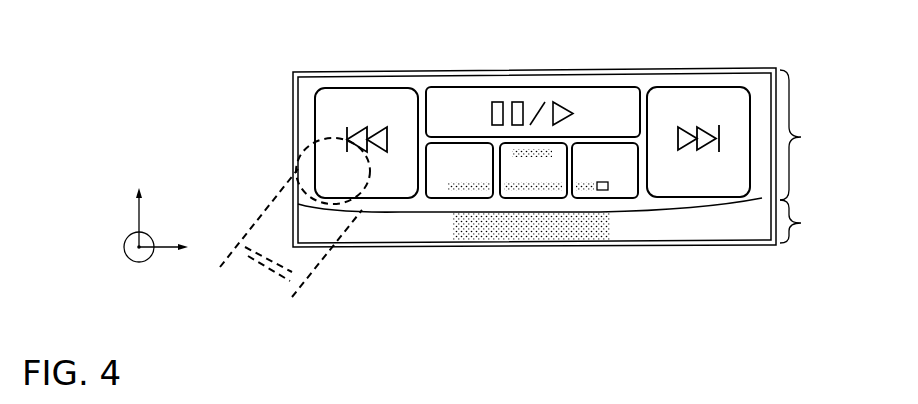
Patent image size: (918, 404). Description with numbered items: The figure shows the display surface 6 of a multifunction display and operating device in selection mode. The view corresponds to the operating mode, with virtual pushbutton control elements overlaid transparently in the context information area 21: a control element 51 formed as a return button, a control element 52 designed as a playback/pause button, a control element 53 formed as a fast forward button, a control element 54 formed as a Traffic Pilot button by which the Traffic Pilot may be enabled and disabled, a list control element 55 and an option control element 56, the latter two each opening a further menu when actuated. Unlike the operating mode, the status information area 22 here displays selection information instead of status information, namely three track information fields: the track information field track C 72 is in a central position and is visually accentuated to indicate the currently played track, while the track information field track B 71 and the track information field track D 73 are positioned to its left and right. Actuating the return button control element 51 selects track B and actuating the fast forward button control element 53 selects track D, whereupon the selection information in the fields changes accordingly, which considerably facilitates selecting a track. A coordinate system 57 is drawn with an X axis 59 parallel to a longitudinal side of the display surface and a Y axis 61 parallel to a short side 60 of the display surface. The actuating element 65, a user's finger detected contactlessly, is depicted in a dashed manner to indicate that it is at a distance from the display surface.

The display surface 6 is at (760, 102).
The context information area 21 is at (808, 135).
The status information area 22 is at (808, 221).
The return button control element 51 is at (371, 90).
The playback/pause button control element 52 is at (547, 90).
The fast forward button control element 53 is at (720, 90).
The Traffic Pilot button control element 54 is at (457, 197).
The list control element 55 is at (507, 197).
The option control element 56 is at (603, 195).
The coordinate system 57 is at (139, 247).
The X axis 59 is at (166, 247).
The short side 60 is at (773, 157).
The Y axis 61 is at (139, 218).
The actuating element 65 is at (270, 200).
The track information field track B 71 is at (380, 235).
The track information field track C 72 is at (548, 230).
The track information field track D 73 is at (690, 233).